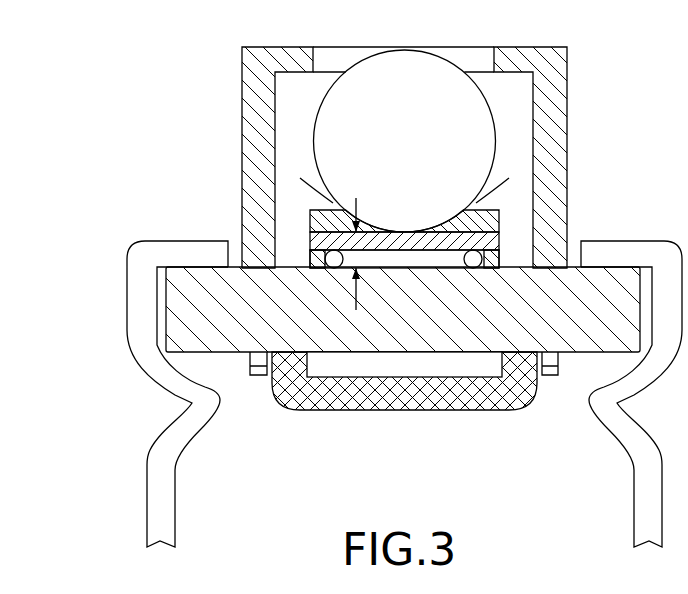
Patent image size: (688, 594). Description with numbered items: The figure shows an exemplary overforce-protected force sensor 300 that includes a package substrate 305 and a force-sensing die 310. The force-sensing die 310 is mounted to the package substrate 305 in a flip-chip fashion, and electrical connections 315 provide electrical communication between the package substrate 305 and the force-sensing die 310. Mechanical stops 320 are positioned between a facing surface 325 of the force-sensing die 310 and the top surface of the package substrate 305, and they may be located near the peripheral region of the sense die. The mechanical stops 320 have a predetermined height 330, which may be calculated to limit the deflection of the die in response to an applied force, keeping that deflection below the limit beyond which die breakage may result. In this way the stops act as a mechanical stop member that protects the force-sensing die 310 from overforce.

The overforce-protected force sensor 300 is at (128, 125).
The package substrate 305 is at (592, 323).
The force-sensing die 310 is at (505, 240).
The electrical connections 315 is at (324, 272).
The mechanical stops 320 is at (332, 266).
The facing surface 325 is at (300, 178).
The predetermined height 330 is at (372, 270).